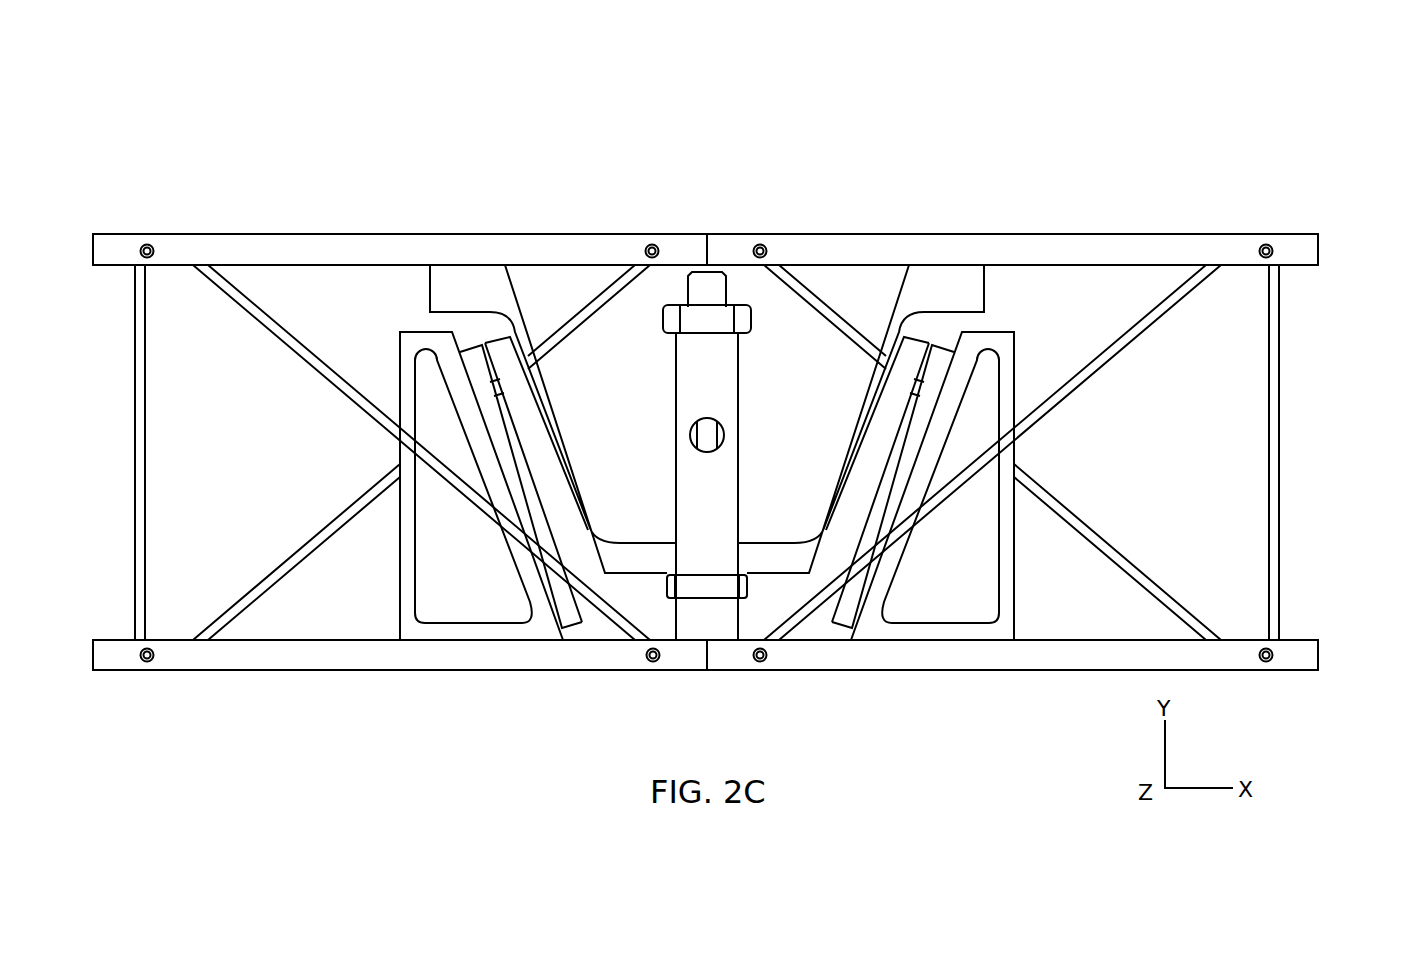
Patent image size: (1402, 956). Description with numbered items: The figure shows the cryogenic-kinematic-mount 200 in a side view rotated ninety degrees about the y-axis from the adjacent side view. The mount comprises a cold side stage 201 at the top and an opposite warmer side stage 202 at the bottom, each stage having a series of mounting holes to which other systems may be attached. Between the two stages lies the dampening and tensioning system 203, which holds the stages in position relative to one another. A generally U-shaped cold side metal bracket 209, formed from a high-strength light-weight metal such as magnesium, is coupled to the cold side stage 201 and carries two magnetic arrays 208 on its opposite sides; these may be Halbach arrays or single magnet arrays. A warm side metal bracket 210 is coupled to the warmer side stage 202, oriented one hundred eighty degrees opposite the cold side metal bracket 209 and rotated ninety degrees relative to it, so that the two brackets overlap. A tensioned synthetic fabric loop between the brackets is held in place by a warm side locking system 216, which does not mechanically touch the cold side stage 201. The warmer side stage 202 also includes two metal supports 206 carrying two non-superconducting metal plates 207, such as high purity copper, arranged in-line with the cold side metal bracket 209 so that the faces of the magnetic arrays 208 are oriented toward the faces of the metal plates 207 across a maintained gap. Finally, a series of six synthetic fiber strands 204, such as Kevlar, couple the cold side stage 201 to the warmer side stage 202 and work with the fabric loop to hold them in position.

The cryogenic-kinematic-mount 200 is at (89, 168).
The cold side stage 201 is at (282, 225).
The warmer side stage 202 is at (202, 665).
The dampening and tensioning system 203 is at (1307, 439).
The synthetic fiber strands 204 is at (1160, 296).
The metal supports 206 is at (401, 613).
The metal plates 207 is at (457, 341).
The magnetic arrays 208 is at (517, 335).
The cold side metal bracket 209 is at (934, 269).
The warm side metal bracket 210 is at (719, 575).
The warm side locking system 216 is at (725, 274).